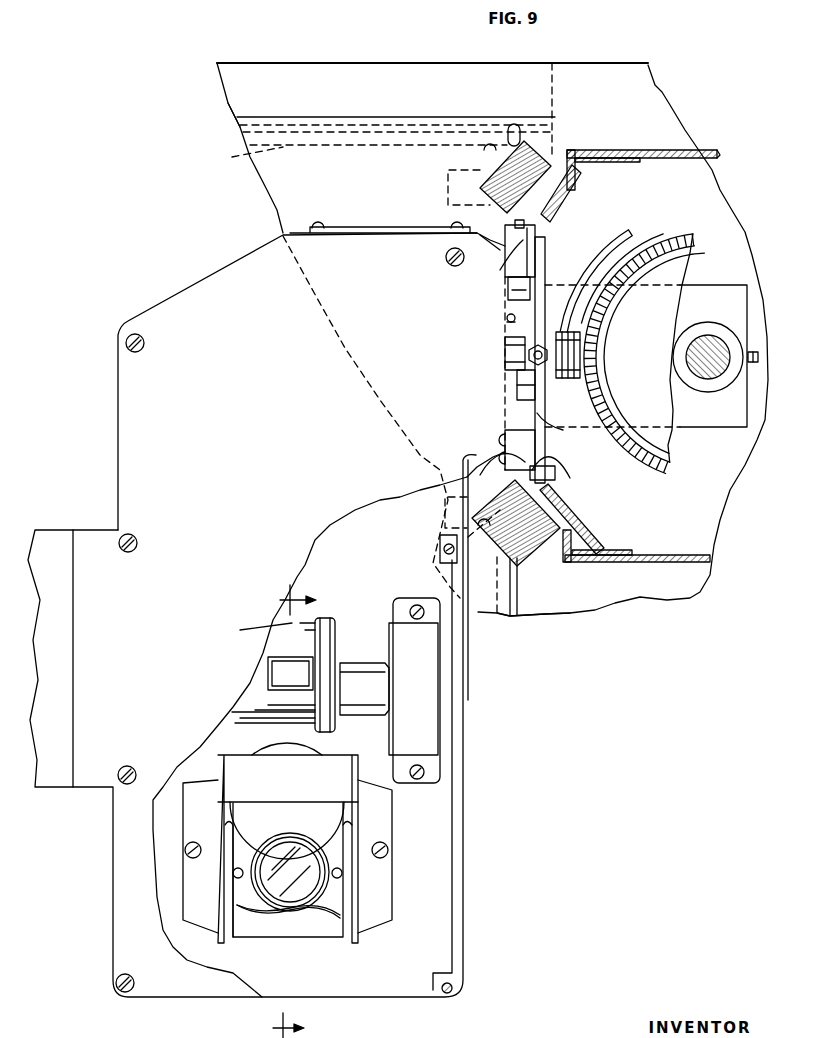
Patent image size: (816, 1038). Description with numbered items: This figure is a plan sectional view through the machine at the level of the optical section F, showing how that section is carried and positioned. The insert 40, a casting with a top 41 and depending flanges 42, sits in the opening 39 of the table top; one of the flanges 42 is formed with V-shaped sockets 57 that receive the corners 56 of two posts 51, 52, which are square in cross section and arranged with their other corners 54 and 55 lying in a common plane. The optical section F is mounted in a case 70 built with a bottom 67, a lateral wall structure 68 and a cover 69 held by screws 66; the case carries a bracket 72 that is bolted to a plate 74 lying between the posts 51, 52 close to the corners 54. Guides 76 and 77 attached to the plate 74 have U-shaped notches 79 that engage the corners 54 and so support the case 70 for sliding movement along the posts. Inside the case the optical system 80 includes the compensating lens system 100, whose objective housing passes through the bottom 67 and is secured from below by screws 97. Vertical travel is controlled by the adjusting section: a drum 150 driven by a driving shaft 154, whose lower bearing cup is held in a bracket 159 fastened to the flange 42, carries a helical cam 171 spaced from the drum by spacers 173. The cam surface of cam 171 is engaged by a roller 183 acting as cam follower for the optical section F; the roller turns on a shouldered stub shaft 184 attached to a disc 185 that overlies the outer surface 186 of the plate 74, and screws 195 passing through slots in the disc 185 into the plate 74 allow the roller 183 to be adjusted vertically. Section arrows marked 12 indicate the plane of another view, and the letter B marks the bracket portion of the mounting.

The opening 39 is at (522, 597).
The insert 40 is at (348, 150).
The top 41 is at (275, 182).
The flanges 42 is at (243, 157).
The post 51 is at (530, 165).
The post 52 is at (530, 528).
The corners 54 is at (512, 222).
The corners 55 is at (516, 145).
The corners 56 is at (468, 487).
The V-shaped sockets 57 is at (498, 175).
The screws 66 is at (447, 265).
The bottom 67 is at (440, 920).
The lateral wall structure 68 is at (462, 858).
The cover 69 is at (133, 913).
The case 70 is at (463, 985).
The bracket 72 is at (228, 268).
The plate 74 is at (545, 250).
The guides 76 is at (520, 437).
The guides 77 is at (520, 280).
The U-shaped notches 79 is at (523, 240).
The optical system 80 is at (268, 850).
The screws 97 is at (233, 875).
The compensating lens system 100 is at (300, 858).
The drum 150 is at (680, 240).
The driving shaft 154 is at (710, 337).
The bracket 159 is at (702, 417).
The helical cam 171 is at (605, 258).
The spacers 173 is at (592, 302).
The roller 183 is at (580, 345).
The stub shaft 184 is at (505, 350).
The disc 185 is at (530, 375).
The outer surface 186 is at (563, 435).
The screws 195 is at (508, 318).
The section line 12 is at (306, 811).
The bracket B is at (552, 148).
The optical section F is at (302, 912).